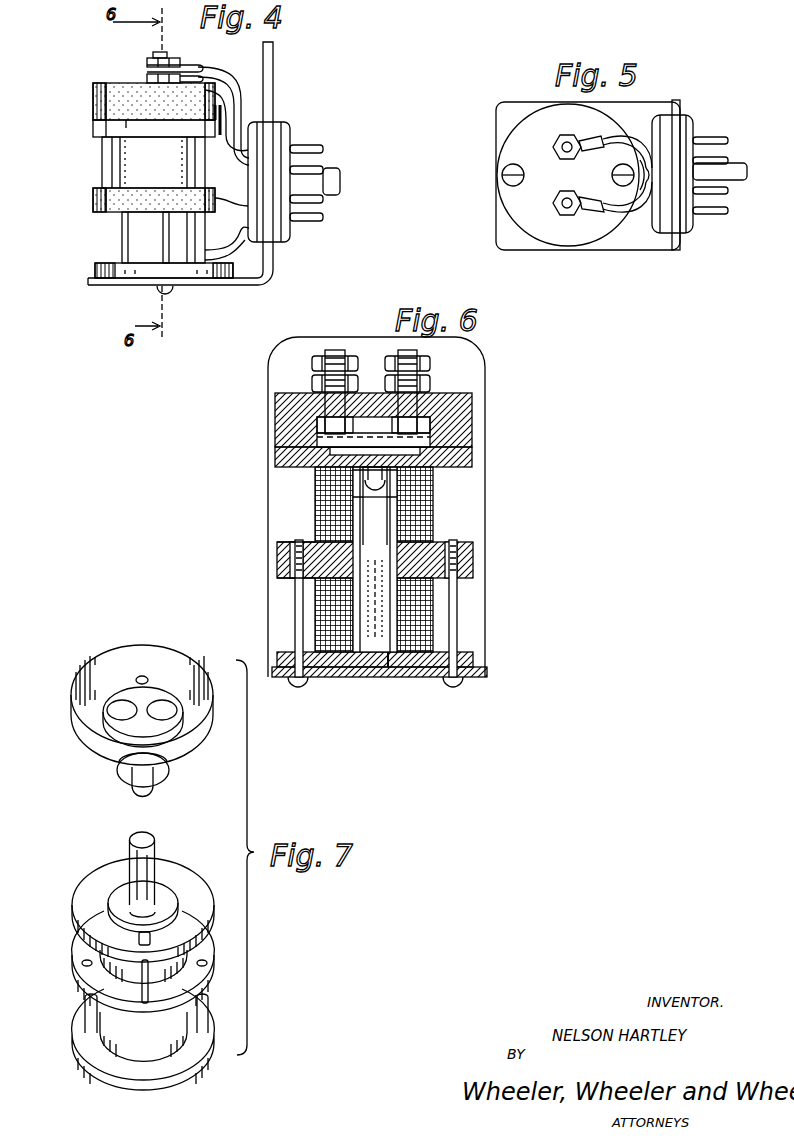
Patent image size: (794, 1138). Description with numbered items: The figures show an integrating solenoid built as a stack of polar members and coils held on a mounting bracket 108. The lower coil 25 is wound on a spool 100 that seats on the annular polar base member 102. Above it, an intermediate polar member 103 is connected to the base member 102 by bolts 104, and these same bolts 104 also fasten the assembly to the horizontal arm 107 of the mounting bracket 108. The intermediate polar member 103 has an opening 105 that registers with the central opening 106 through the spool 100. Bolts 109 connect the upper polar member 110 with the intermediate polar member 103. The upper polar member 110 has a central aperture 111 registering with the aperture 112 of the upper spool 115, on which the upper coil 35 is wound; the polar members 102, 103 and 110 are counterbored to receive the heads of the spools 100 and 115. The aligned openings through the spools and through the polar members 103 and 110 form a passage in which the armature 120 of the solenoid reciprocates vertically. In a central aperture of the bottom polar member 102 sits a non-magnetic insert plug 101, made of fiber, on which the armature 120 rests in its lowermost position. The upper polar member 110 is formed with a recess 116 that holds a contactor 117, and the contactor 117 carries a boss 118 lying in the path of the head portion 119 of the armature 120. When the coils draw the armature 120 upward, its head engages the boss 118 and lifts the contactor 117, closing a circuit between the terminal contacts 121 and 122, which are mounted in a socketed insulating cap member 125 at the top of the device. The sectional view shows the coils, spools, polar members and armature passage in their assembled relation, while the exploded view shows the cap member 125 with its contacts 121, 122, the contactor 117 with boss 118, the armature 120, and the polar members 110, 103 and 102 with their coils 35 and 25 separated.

In FIG. 4, the coil 25 is at (140, 245).
In FIG. 6, the coil 25 is at (433, 611).
In FIG. 7, the coil 25 is at (150, 1047).
In FIG. 4, the upper coil 35 is at (152, 163).
In FIG. 6, the upper coil 35 is at (330, 507).
In FIG. 7, the upper coil 35 is at (125, 972).
In FIG. 6, the spool 100 is at (427, 672).
In FIG. 6, the non-magnetic insert plug 101 is at (388, 680).
In FIG. 4, the annular polar base member 102 is at (153, 273).
In FIG. 6, the annular polar base member 102 is at (344, 660).
In FIG. 7, the annular polar base member 102 is at (197, 1067).
In FIG. 4, the intermediate polar member 103 is at (93, 204).
In FIG. 6, the intermediate polar member 103 is at (469, 553).
In FIG. 7, the intermediate polar member 103 is at (217, 987).
In FIG. 4, the bolts 104 is at (163, 231).
In FIG. 7, the bolts 104 is at (203, 1020).
In FIG. 6, the opening 105 is at (400, 558).
In FIG. 6, the central opening 106 is at (433, 624).
In FIG. 4, the horizontal arm 107 is at (236, 283).
In FIG. 5, the horizontal arm 107 is at (623, 238).
In FIG. 4, the mounting bracket 108 is at (283, 254).
In FIG. 5, the mounting bracket 108 is at (688, 251).
In FIG. 4, the bolts 109 is at (102, 166).
In FIG. 7, the bolts 109 is at (149, 994).
In FIG. 4, the upper polar member 110 is at (93, 130).
In FIG. 6, the upper polar member 110 is at (470, 458).
In FIG. 7, the upper polar member 110 is at (87, 918).
In FIG. 6, the central aperture 111 is at (470, 440).
In FIG. 7, the central aperture 111 is at (160, 908).
In FIG. 6, the aperture 112 is at (387, 482).
In FIG. 6, the spool 115 is at (400, 492).
In FIG. 6, the recess 116 is at (313, 448).
In FIG. 7, the recess 116 is at (114, 904).
In FIG. 6, the contactor 117 is at (435, 425).
In FIG. 7, the contactor 117 is at (160, 775).
In FIG. 6, the boss 118 is at (327, 478).
In FIG. 7, the boss 118 is at (143, 790).
In FIG. 6, the head portion 119 is at (327, 513).
In FIG. 7, the head portion 119 is at (146, 845).
In FIG. 6, the armature 120 is at (282, 553).
In FIG. 7, the armature 120 is at (148, 870).
In FIG. 6, the terminal contact 121 is at (316, 432).
In FIG. 7, the terminal contact 121 is at (125, 711).
In FIG. 6, the terminal contact 122 is at (432, 404).
In FIG. 7, the terminal contact 122 is at (160, 709).
In FIG. 4, the socketed insulating cap member 125 is at (95, 108).
In FIG. 6, the socketed insulating cap member 125 is at (473, 400).
In FIG. 7, the socketed insulating cap member 125 is at (72, 686).